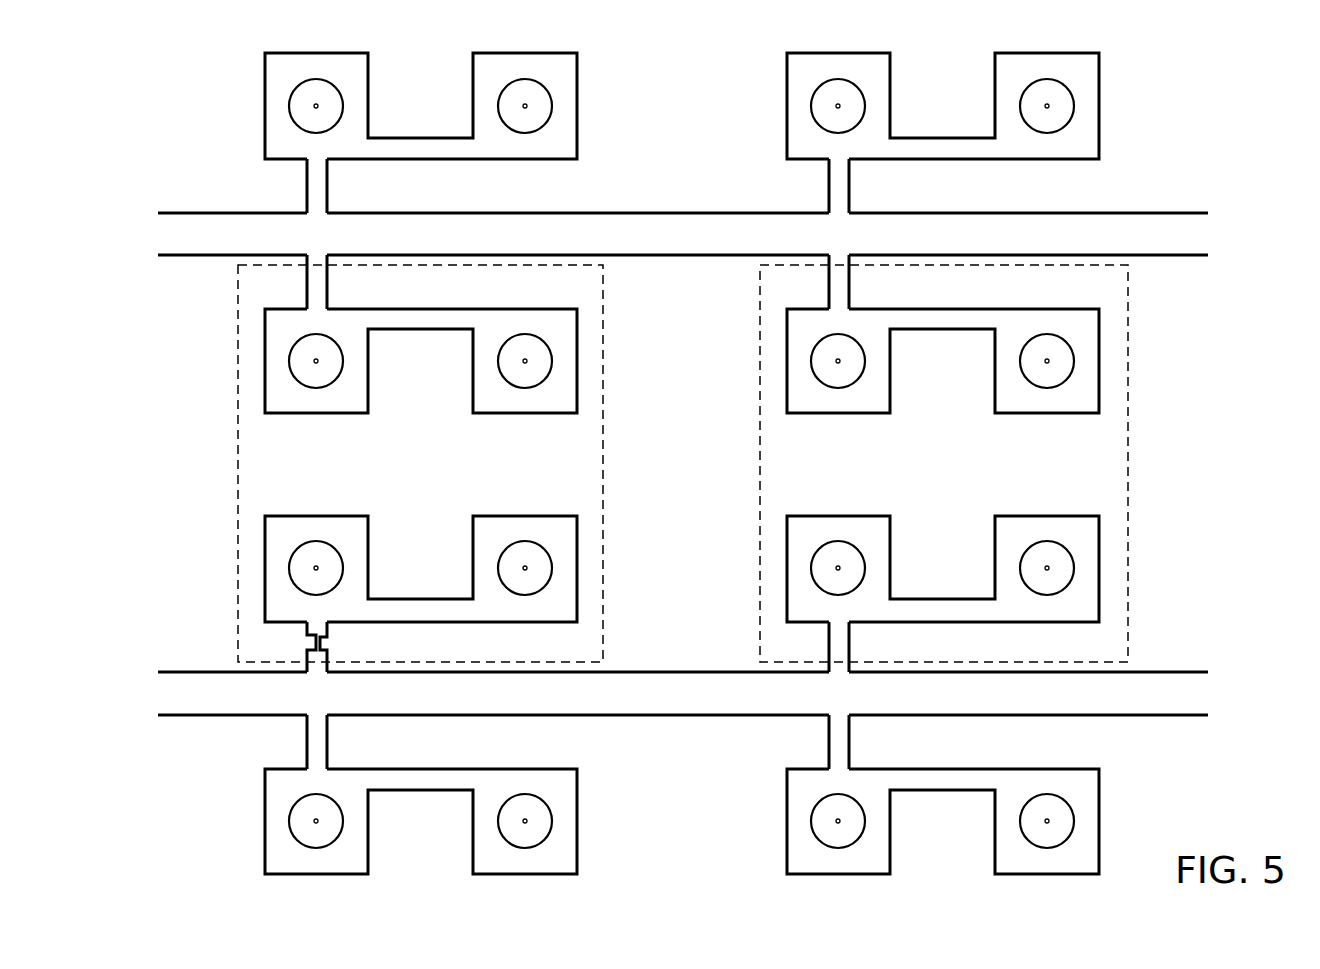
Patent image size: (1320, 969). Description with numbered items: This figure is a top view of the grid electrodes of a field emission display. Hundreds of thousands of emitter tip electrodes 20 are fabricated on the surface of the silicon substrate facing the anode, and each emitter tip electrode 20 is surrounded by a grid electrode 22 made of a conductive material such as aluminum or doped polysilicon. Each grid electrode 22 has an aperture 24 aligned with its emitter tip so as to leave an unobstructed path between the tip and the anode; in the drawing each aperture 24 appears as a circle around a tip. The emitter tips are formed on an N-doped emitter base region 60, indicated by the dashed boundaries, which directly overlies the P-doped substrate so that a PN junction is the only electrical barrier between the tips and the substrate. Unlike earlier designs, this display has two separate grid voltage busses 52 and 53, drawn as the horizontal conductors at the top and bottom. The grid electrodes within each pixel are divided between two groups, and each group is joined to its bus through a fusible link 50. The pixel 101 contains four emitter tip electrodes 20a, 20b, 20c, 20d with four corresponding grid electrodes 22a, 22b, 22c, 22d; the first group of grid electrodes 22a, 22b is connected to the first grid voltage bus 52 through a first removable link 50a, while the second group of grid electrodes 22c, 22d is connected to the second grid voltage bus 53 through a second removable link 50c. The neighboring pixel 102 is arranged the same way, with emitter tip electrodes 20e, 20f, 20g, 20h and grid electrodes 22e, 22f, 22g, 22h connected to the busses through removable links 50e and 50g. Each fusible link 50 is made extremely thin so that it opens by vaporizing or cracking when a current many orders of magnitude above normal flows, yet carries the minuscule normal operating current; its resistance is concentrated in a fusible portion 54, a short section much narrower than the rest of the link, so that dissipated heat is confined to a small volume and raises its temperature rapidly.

The emitter tip electrode 20 is at (523, 106).
The emitter tip electrode 20a is at (316, 361).
The emitter tip electrode 20b is at (525, 361).
The emitter tip electrode 20c is at (316, 568).
The emitter tip electrode 20d is at (525, 568).
The emitter tip electrode 20e is at (838, 361).
The emitter tip electrode 20f is at (1047, 361).
The emitter tip electrode 20g is at (838, 568).
The emitter tip electrode 20h is at (1047, 568).
The grid electrode 22 is at (498, 58).
The grid electrode 22a is at (272, 349).
The grid electrode 22b is at (570, 349).
The grid electrode 22c is at (272, 580).
The grid electrode 22d is at (570, 580).
The grid electrode 22e is at (794, 349).
The grid electrode 22f is at (1092, 349).
The grid electrode 22g is at (794, 580).
The grid electrode 22h is at (1092, 580).
The aperture 24 is at (522, 87).
The fusible link 50 is at (333, 196).
The first removable link 50a is at (333, 281).
The second removable link 50c is at (333, 660).
The removable link 50e is at (855, 281).
The removable link 50g is at (855, 652).
The first grid voltage bus 52 is at (210, 213).
The second grid voltage bus 53 is at (210, 715).
The fusible portion 54 is at (314, 641).
The emitter base region 60 is at (238, 452).
The pixel 101 is at (226, 482).
The pixel 102 is at (1144, 481).